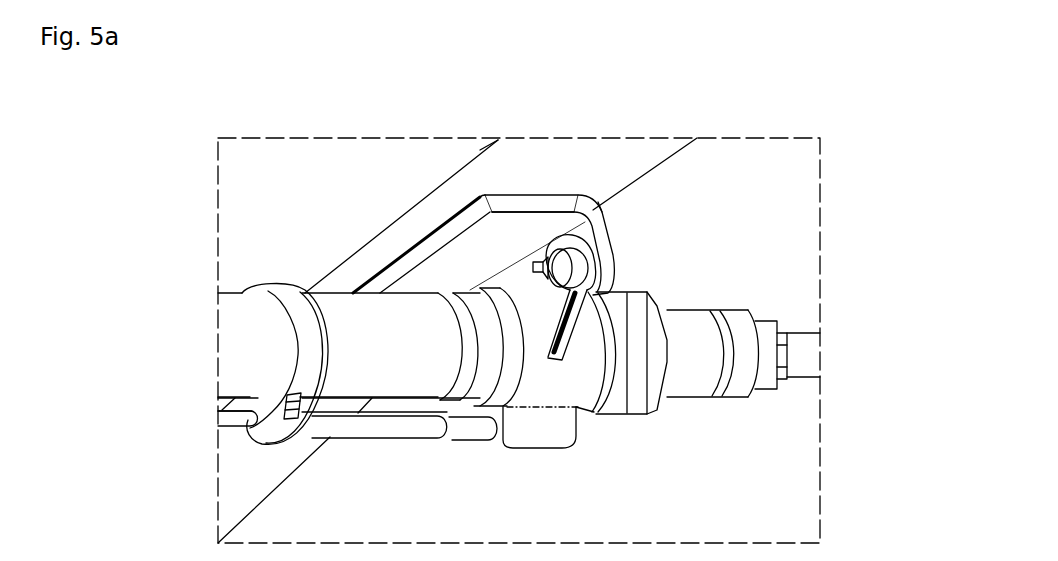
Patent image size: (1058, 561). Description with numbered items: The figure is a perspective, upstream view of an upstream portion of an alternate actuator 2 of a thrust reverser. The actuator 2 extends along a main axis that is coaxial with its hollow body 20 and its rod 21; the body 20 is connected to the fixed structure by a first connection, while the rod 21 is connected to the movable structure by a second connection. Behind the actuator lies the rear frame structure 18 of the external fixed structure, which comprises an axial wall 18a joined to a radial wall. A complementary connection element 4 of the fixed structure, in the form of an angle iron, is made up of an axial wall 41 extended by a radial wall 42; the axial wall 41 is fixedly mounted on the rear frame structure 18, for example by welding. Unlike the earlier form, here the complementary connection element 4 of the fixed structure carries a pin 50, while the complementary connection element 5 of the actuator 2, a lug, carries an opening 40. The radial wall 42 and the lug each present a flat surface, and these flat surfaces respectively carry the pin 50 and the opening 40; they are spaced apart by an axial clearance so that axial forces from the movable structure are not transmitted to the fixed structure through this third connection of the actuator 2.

The actuator 2 is at (252, 126).
The complementary connection element 4 is at (711, 206).
The complementary connection element 5 is at (546, 330).
The rear frame structure 18 is at (673, 128).
The axial wall 18a is at (502, 150).
The body 20 is at (224, 280).
The rod 21 is at (790, 303).
The opening 40 is at (564, 298).
The axial wall 41 is at (548, 203).
The radial wall 42 is at (604, 246).
The pin 50 is at (516, 266).